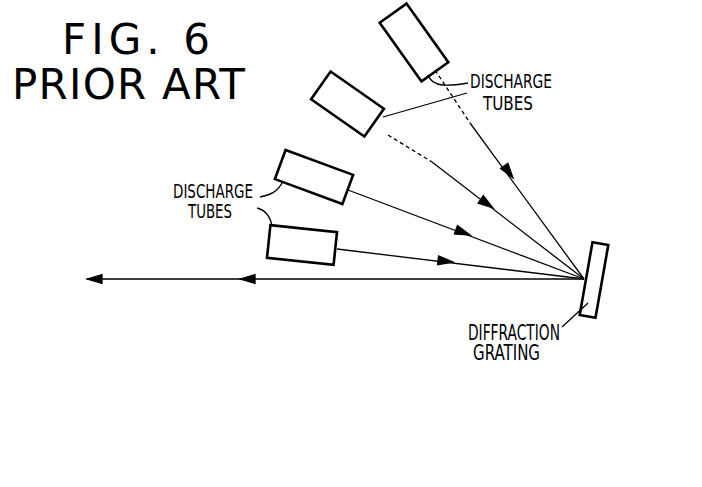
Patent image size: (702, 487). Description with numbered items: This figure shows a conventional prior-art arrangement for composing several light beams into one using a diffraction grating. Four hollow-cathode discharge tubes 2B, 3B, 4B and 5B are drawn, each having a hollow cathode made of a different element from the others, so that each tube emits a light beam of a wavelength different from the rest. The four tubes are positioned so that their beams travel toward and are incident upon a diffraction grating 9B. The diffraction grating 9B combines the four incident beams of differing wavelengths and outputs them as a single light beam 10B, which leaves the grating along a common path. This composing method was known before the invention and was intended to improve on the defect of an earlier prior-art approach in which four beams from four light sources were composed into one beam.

The hollow-cathode discharge tube 2B is at (432, 40).
The hollow-cathode discharge tube 3B is at (347, 82).
The hollow-cathode discharge tube 4B is at (283, 177).
The hollow-cathode discharge tube 5B is at (267, 233).
The diffraction grating 9B is at (600, 240).
The single light beam 10B is at (363, 281).